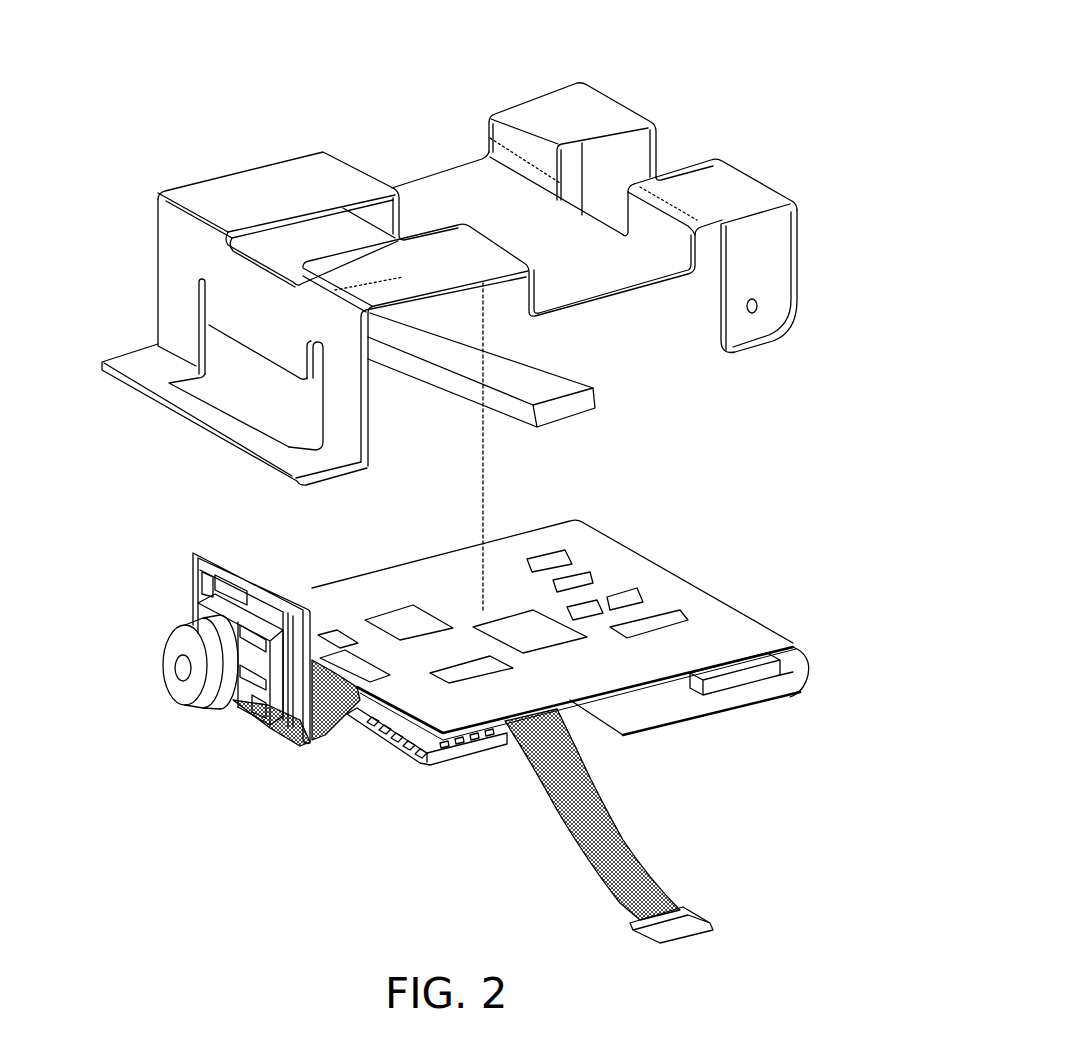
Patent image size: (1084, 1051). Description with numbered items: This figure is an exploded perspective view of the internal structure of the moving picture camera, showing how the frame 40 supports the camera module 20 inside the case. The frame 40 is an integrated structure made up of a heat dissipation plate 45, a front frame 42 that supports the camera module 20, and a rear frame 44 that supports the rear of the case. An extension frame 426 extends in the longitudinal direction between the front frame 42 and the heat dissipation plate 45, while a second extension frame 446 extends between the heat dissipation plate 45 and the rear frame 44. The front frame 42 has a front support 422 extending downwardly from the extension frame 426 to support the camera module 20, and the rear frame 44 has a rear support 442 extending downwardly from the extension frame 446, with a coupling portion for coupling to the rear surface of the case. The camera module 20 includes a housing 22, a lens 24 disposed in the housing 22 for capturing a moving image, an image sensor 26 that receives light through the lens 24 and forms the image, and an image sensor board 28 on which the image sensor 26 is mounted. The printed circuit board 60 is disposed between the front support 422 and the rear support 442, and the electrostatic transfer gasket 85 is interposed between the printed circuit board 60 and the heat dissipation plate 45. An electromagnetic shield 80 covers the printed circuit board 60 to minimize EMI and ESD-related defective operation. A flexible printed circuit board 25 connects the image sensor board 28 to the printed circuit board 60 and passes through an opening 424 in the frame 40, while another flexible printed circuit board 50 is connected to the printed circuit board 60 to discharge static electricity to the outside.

The frame 40 is at (130, 139).
The front frame 42 is at (232, 157).
The front support 422 is at (170, 292).
The opening 424 is at (262, 392).
The extension frame 426 is at (285, 168).
The heat dissipation plate 45 is at (437, 182).
The rear frame 44 is at (613, 93).
The extension frame 446 is at (543, 100).
The rear support 442 is at (805, 307).
The electrostatic transfer gasket 85 is at (595, 397).
The electromagnetic shield 80 is at (716, 583).
The printed circuit board 60 is at (758, 686).
The camera module 20 is at (149, 666).
The housing 22 is at (183, 703).
The lens 24 is at (177, 673).
The image sensor 26 is at (253, 737).
The image sensor board 28 is at (277, 740).
The flexible printed circuit board 25 is at (332, 735).
The flexible printed circuit board 50 is at (648, 866).